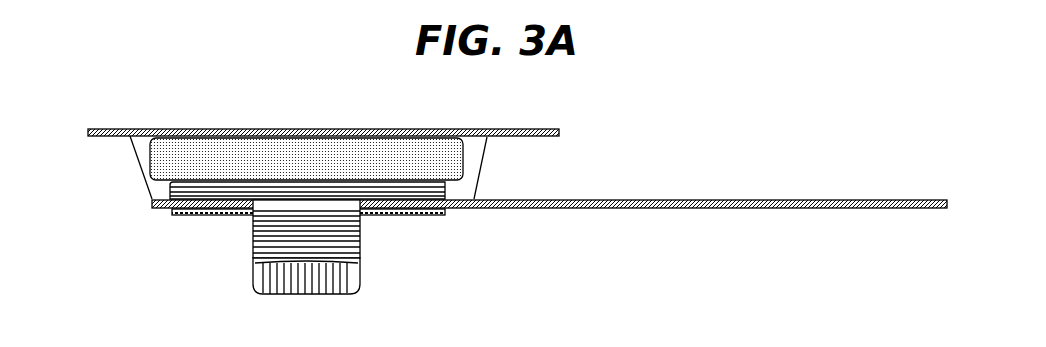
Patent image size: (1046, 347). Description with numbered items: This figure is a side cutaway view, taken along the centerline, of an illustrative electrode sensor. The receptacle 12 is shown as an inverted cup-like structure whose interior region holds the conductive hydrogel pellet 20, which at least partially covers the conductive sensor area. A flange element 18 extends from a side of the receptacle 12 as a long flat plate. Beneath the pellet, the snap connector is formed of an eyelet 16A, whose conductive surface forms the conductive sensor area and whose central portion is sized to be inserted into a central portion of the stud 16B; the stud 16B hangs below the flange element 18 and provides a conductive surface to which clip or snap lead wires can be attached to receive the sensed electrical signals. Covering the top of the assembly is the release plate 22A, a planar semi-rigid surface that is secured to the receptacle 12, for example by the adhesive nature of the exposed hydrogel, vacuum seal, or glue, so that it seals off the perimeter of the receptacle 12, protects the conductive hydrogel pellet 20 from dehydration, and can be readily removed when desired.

The receptacle 12 is at (483, 170).
The eyelet 16A is at (168, 188).
The stud 16B is at (258, 285).
The flange element 18 is at (635, 200).
The conductive hydrogel pellet 20 is at (160, 156).
The release plate 22A is at (304, 128).